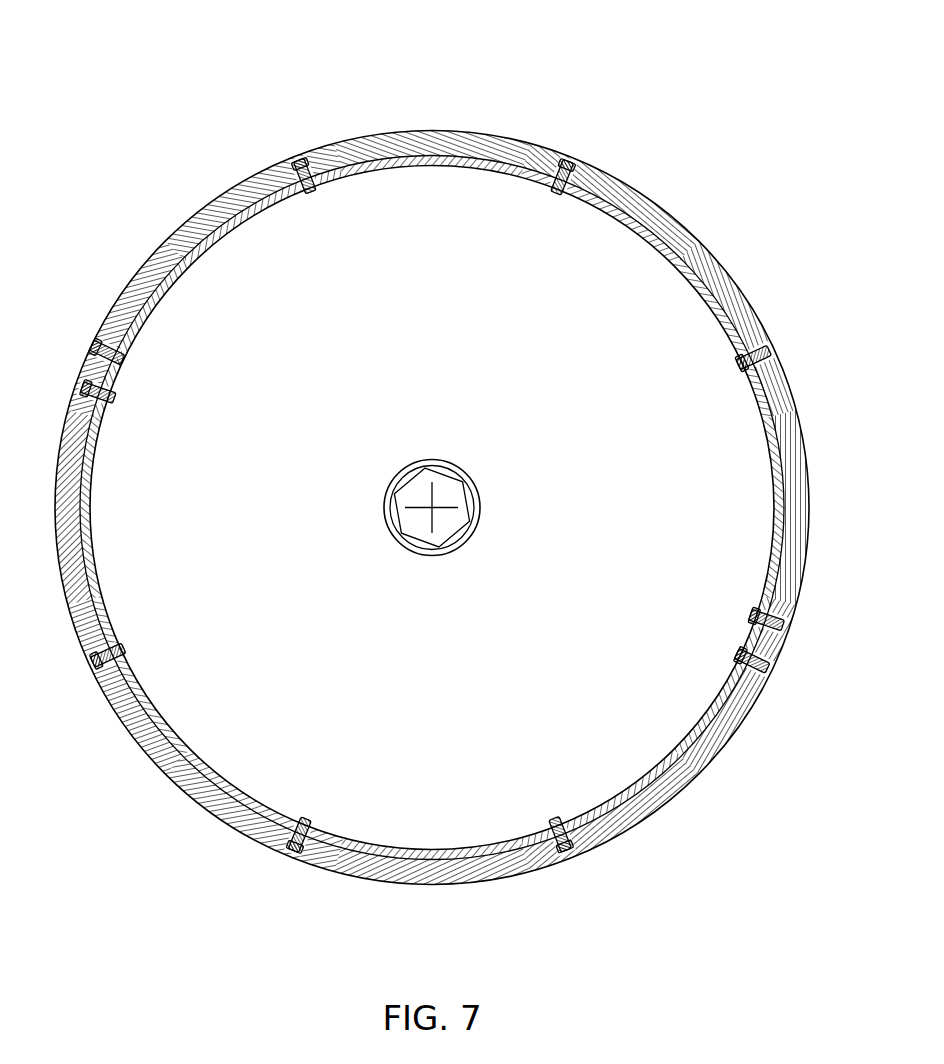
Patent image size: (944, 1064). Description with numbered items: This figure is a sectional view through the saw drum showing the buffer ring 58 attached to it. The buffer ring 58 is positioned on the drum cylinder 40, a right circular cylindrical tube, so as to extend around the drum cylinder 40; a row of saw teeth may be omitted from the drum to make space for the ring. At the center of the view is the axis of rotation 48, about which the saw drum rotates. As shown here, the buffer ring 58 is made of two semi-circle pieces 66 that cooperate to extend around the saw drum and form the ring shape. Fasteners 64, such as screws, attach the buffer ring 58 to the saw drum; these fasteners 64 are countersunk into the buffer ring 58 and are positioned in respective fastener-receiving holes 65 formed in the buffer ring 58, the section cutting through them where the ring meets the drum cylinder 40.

The buffer ring 58 is at (202, 84).
The drum cylinder 40 is at (84, 510).
The axis of rotation 48 is at (433, 508).
The fasteners 64 is at (123, 366).
The fastener-receiving holes 65 is at (107, 334).
The semi-circle pieces 66 is at (802, 428).